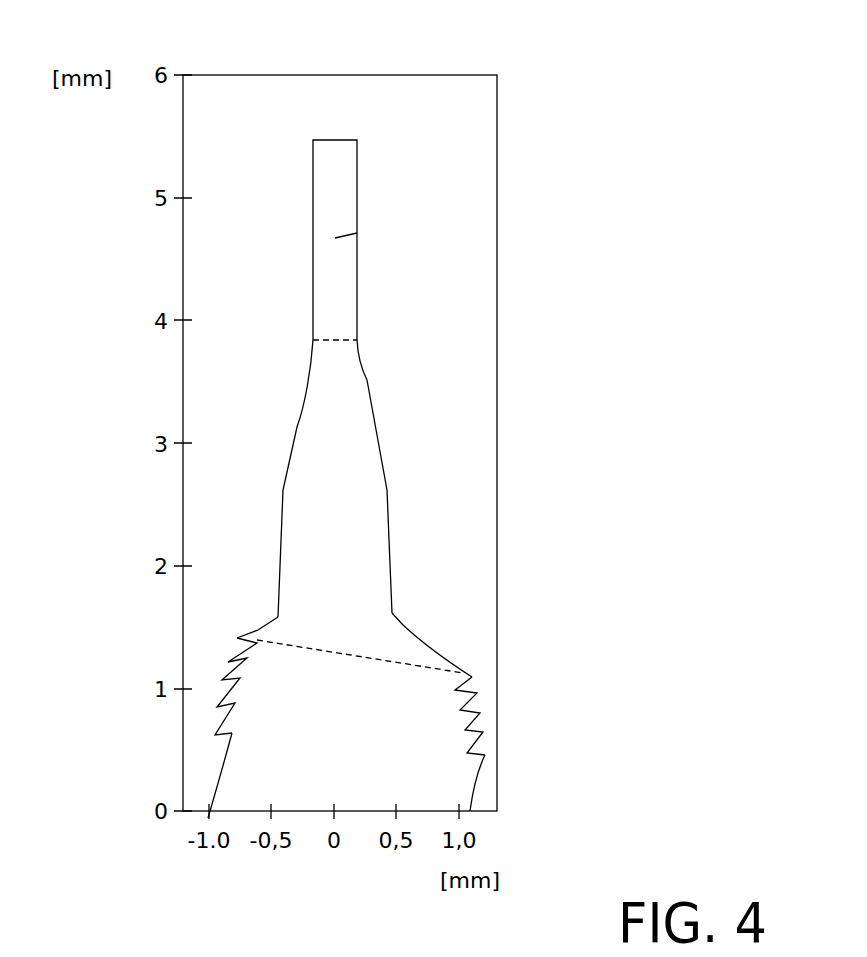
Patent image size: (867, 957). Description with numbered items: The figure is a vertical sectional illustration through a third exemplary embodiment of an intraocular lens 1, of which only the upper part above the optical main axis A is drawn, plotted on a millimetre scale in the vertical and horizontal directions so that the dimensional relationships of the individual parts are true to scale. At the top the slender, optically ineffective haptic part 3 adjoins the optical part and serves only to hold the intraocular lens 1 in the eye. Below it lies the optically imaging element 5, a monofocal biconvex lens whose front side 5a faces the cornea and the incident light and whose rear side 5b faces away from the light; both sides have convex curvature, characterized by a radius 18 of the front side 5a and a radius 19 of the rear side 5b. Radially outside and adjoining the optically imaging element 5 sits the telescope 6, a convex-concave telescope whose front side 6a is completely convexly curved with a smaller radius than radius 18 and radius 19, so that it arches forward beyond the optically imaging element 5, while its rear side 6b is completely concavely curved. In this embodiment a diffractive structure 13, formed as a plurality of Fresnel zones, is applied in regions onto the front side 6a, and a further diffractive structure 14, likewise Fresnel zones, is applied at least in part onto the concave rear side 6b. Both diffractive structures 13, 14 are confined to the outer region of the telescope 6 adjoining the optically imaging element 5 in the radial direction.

The intraocular lens 1 is at (405, 172).
The haptic part 3 is at (381, 208).
The optically imaging element 5 is at (415, 435).
The front side of the optically imaging element 5a is at (275, 492).
The rear side of the optically imaging element 5b is at (393, 492).
The telescope 6 is at (483, 688).
The front side of the telescope 6a is at (208, 771).
The rear side of the telescope 6b is at (478, 790).
The diffractive structure 13 is at (218, 670).
The further diffractive structure 14 is at (483, 720).
The radius of the front side of the optically imaging element 18 is at (297, 427).
The radius of the rear side of the optically imaging element 19 is at (363, 360).
The optical main axis A is at (292, 811).